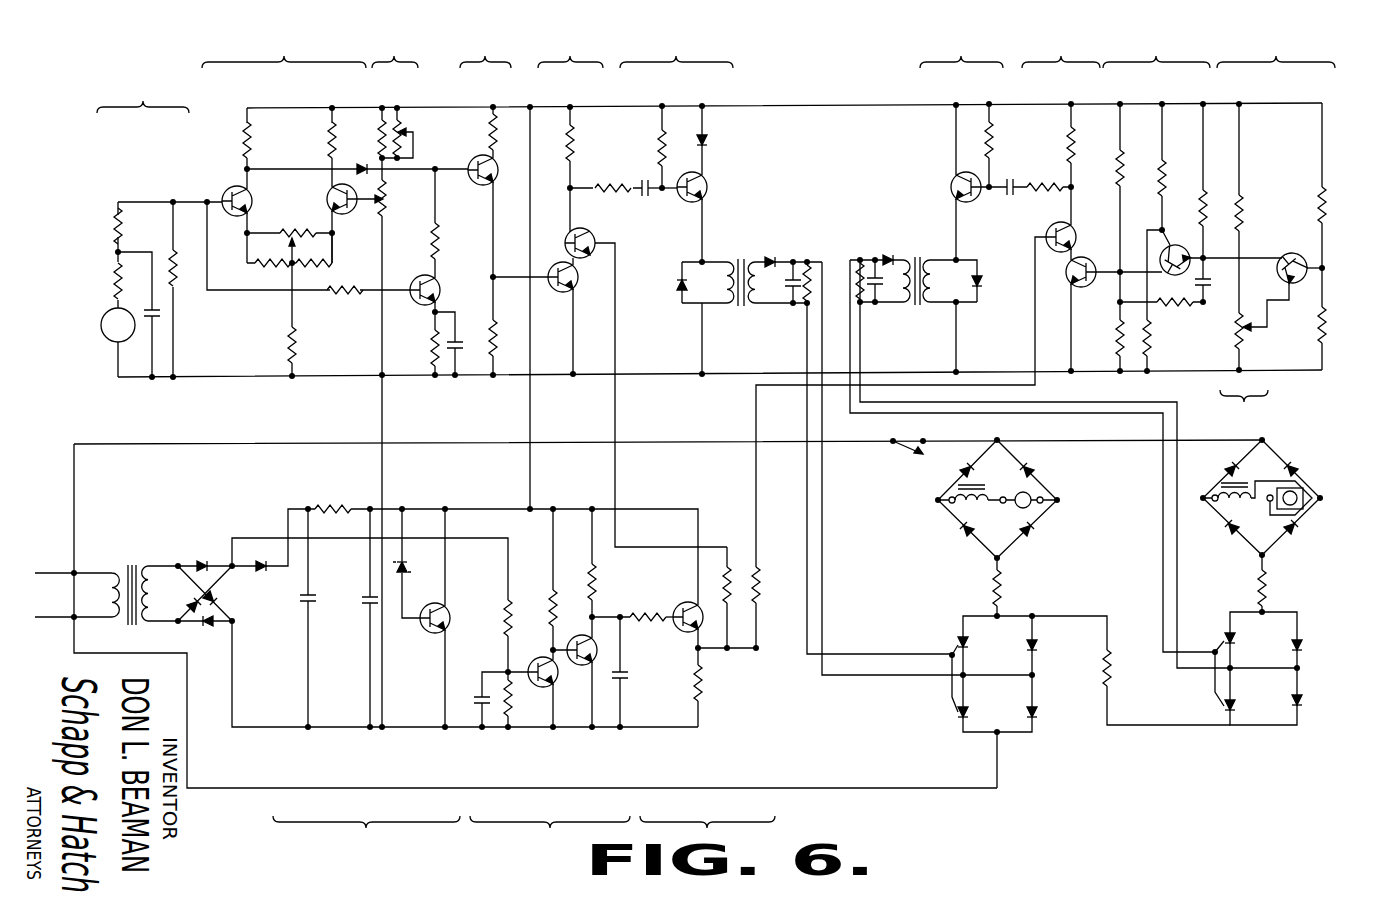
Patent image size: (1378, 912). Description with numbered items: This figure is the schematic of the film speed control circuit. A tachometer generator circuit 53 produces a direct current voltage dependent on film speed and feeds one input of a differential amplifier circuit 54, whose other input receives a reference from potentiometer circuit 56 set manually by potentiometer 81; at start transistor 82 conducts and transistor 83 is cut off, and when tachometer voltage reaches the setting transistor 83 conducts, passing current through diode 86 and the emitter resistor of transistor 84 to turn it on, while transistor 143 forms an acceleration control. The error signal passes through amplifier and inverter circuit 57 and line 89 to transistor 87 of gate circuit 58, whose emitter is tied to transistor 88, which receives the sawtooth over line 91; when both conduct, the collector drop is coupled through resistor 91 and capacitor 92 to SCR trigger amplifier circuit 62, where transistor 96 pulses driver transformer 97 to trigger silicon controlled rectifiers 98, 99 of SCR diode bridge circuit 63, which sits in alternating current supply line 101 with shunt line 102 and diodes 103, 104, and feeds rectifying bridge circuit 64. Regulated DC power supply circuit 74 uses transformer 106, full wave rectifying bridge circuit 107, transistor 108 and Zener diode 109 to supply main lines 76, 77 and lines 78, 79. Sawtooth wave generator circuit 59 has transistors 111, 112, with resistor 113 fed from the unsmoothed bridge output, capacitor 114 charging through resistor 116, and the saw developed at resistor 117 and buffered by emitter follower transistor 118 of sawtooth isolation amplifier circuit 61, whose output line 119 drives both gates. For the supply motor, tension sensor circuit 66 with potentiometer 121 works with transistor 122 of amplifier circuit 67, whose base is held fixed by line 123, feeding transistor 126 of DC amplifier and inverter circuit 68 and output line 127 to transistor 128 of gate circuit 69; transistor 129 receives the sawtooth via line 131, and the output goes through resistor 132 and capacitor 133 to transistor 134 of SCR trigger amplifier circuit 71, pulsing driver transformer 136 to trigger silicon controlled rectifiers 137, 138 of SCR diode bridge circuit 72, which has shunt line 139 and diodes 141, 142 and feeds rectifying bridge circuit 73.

The tachometer generator circuit 53 is at (143, 95).
The differential amplifier circuit 54 is at (284, 49).
The potentiometer circuit 56 is at (395, 49).
The amplifier and inverter circuit 57 is at (485, 49).
The gate circuit 58 is at (570, 49).
The SCR trigger amplifier circuit 62 is at (676, 49).
The SCR trigger amplifier circuit 71 is at (961, 48).
The gate circuit 69 is at (1061, 48).
The DC amplifier and inverter circuit 68 is at (1156, 48).
The amplifier circuit 67 is at (1276, 48).
The tension sensor circuit 66 is at (1244, 410).
The regulated DC power supply circuit 74 is at (366, 838).
The sawtooth wave generator circuit 59 is at (550, 836).
The sawtooth isolation amplifier circuit 61 is at (707, 832).
The main line 76 is at (532, 107).
The main line 77 is at (347, 378).
The line 78 is at (400, 735).
The line 79 is at (503, 507).
The potentiometer 81 is at (388, 205).
The transistor 82 is at (352, 215).
The transistor 83 is at (255, 205).
The transistor 84 is at (478, 188).
The diode 86 is at (364, 163).
The transistor 87 is at (560, 292).
The transistor 88 is at (595, 238).
The line 89 is at (520, 276).
The line 91 is at (636, 328).
The capacitor 92 is at (645, 198).
The transistor 96 is at (708, 185).
The driver transformer 97 is at (745, 258).
The silicon controlled rectifier 98 is at (955, 647).
The silicon controlled rectifier 99 is at (958, 714).
The alternating current supply line 101 is at (40, 596).
The shunt line 102 is at (985, 682).
The diode 103 is at (1038, 712).
The diode 104 is at (1038, 647).
The transformer 106 is at (135, 565).
The full wave rectifying bridge circuit 107 is at (226, 604).
The transistor 108 is at (450, 610).
The Zener diode 109 is at (416, 556).
The transistor 111 is at (553, 690).
The transistor 112 is at (582, 622).
The resistor 113 is at (512, 625).
The capacitor 114 is at (622, 685).
The resistor 116 is at (605, 576).
The resistor 117 is at (642, 612).
The emitter follower transistor 118 is at (690, 632).
The output line 119 is at (716, 650).
The potentiometer 121 is at (1246, 335).
The transistor 122 is at (1298, 252).
The line 123 is at (1305, 290).
The transistor 126 is at (1178, 245).
The output line 127 is at (1130, 262).
The transistor 128 is at (1088, 258).
The transistor 129 is at (1047, 235).
The line 131 is at (1030, 324).
The resistor 132 is at (1042, 183).
The capacitor 133 is at (1010, 195).
The transistor 134 is at (950, 187).
The driver transformer 136 is at (912, 258).
The silicon controlled rectifier 137 is at (1222, 640).
The silicon controlled rectifier 138 is at (1224, 706).
The shunt line 139 is at (1275, 655).
The diode 141 is at (1302, 703).
The diode 142 is at (1302, 650).
The transistor 143 is at (420, 305).
The SCR diode bridge circuit 63 is at (995, 687).
The rectifying bridge circuit 64 is at (1048, 478).
The SCR diode bridge circuit 72 is at (1257, 650).
The rectifying bridge circuit 73 is at (1298, 480).